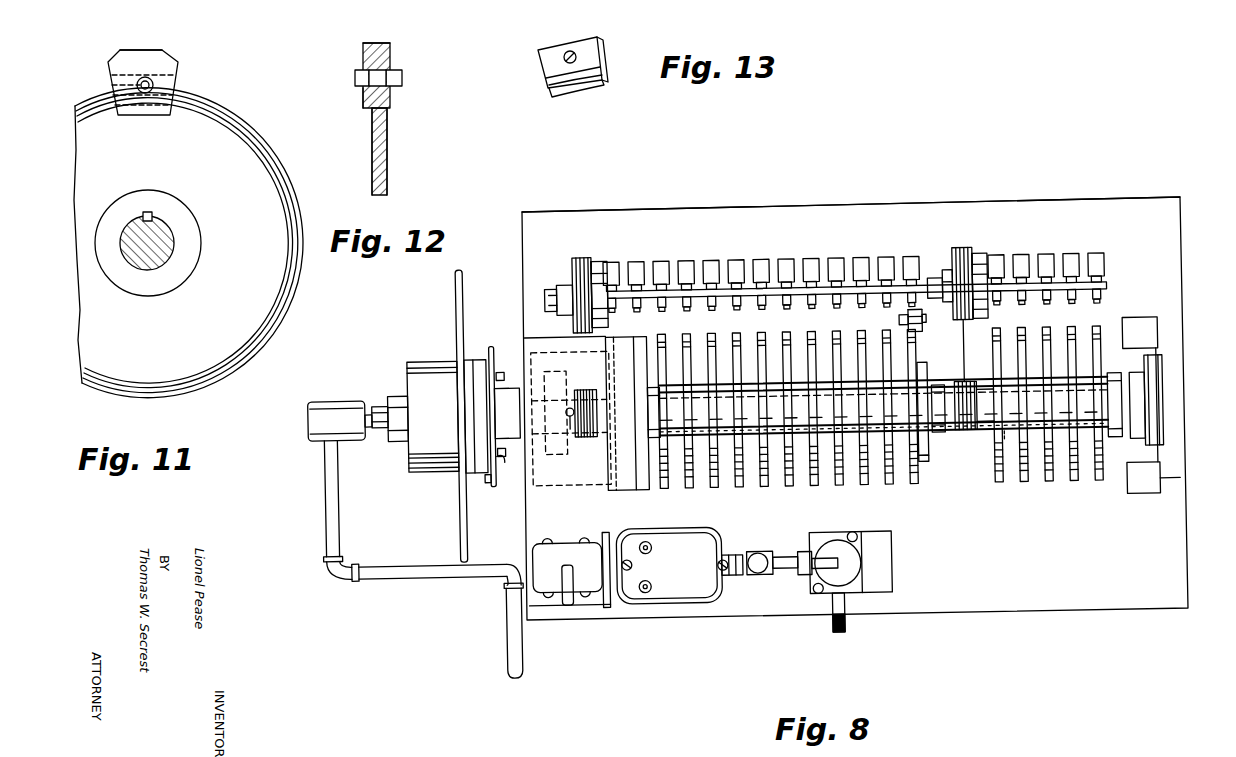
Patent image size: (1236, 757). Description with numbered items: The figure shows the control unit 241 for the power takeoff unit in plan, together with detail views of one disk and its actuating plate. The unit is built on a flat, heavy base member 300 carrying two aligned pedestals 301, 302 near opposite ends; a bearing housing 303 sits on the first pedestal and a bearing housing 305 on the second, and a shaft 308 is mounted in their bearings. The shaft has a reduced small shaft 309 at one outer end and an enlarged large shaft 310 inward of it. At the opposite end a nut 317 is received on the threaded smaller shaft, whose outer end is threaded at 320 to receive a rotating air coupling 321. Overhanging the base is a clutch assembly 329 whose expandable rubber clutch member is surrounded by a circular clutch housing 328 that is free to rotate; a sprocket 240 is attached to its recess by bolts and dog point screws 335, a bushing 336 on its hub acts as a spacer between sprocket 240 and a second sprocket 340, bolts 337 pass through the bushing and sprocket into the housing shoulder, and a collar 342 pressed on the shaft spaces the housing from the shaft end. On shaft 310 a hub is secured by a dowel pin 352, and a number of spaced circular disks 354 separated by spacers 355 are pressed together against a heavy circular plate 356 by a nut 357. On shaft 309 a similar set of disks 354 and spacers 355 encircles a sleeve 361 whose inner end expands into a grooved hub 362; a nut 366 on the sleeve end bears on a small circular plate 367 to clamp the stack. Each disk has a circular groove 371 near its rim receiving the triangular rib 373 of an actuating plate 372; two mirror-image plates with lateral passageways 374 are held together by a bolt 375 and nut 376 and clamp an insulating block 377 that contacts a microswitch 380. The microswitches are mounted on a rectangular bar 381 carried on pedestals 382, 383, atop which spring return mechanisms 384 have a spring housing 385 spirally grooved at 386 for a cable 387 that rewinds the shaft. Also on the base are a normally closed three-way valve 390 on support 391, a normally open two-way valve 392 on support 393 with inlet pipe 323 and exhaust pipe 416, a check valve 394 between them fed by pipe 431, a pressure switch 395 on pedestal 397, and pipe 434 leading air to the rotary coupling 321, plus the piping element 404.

In FIG. 8, the sprocket 240 is at (454, 311).
In FIG. 8, the control unit 241 is at (820, 205).
In FIG. 8, the base member 300 is at (1182, 222).
In FIG. 8, the pedestal 301 is at (1160, 480).
In FIG. 8, the pedestal 302 is at (520, 488).
In FIG. 8, the bearing housing 303 is at (1144, 478).
In FIG. 8, the bearing housing 305 is at (556, 462).
In FIG. 11, the shaft 308 is at (153, 217).
In FIG. 8, the shaft 308 is at (1176, 405).
In FIG. 8, the small shaft 309 is at (973, 442).
In FIG. 8, the large shaft 310 is at (935, 440).
In FIG. 8, the nut 317 is at (390, 394).
In FIG. 8, the threads 320 is at (366, 405).
In FIG. 8, the rotating air coupling 321 is at (337, 421).
In FIG. 8, the pipe 323 is at (781, 573).
In FIG. 8, the clutch housing 328 is at (432, 416).
In FIG. 8, the clutch assembly 329 is at (414, 474).
In FIG. 8, the dog point screws 335 is at (483, 482).
In FIG. 8, the bushing 336 is at (472, 359).
In FIG. 8, the bolts 337 is at (502, 466).
In FIG. 8, the sprocket 340 is at (489, 346).
In FIG. 8, the collar 342 is at (498, 388).
In FIG. 8, the dowel pin 352 is at (580, 438).
In FIG. 12, the circular disks 354 is at (386, 124).
In FIG. 8, the circular disks 354 is at (905, 490).
In FIG. 8, the spacer 355 is at (884, 413).
In FIG. 8, the heavy circular plate 356 is at (921, 470).
In FIG. 8, the nut 357 is at (924, 384).
In FIG. 8, the sleeve 361 is at (1005, 452).
In FIG. 8, the hub 362 is at (984, 392).
In FIG. 8, the nut 366 is at (1112, 448).
In FIG. 8, the small circular plate 367 is at (1126, 386).
In FIG. 11, the circular groove 371 is at (208, 107).
In FIG. 12, the circular groove 371 is at (371, 112).
In FIG. 8, the circular groove 371 is at (660, 344).
In FIG. 11, the plate 372 is at (176, 80).
In FIG. 12, the plate 372 is at (391, 100).
In FIG. 13, the plate 372 is at (613, 54).
In FIG. 8, the plate 372 is at (906, 322).
In FIG. 12, the circular rib 373 is at (362, 96).
In FIG. 13, the circular rib 373 is at (550, 92).
In FIG. 13, the lateral passageway 374 is at (570, 50).
In FIG. 11, the bolt 375 is at (147, 77).
In FIG. 12, the bolt 375 is at (357, 70).
In FIG. 8, the bolt 375 is at (924, 328).
In FIG. 11, the nut 376 is at (110, 85).
In FIG. 12, the nut 376 is at (392, 70).
In FIG. 8, the nut 376 is at (897, 328).
In FIG. 11, the block 377 is at (140, 50).
In FIG. 12, the block 377 is at (376, 43).
In FIG. 8, the block 377 is at (918, 319).
In FIG. 8, the microswitch 380 is at (905, 286).
In FIG. 8, the rectangular bar 381 is at (1104, 296).
In FIG. 8, the pedestal 382 is at (563, 286).
In FIG. 8, the pedestal 383 is at (946, 278).
In FIG. 8, the spring return mechanism 384 is at (597, 255).
In FIG. 8, the spring housing 385 is at (600, 263).
In FIG. 8, the spiral groove 386 is at (578, 259).
In FIG. 8, the cable 387 is at (600, 336).
In FIG. 8, the three-way valve 390 is at (531, 582).
In FIG. 8, the support 391 is at (590, 610).
In FIG. 8, the two-way valve 392 is at (817, 545).
In FIG. 8, the support 393 is at (885, 575).
In FIG. 8, the check valve 394 is at (755, 550).
In FIG. 8, the pressure switch 395 is at (653, 529).
In FIG. 8, the pedestal 397 is at (608, 492).
In FIG. 8, the pipe 404 is at (508, 562).
In FIG. 8, the pipe 416 is at (840, 628).
In FIG. 8, the pipe 431 is at (727, 559).
In FIG. 8, the pipe 434 is at (318, 465).